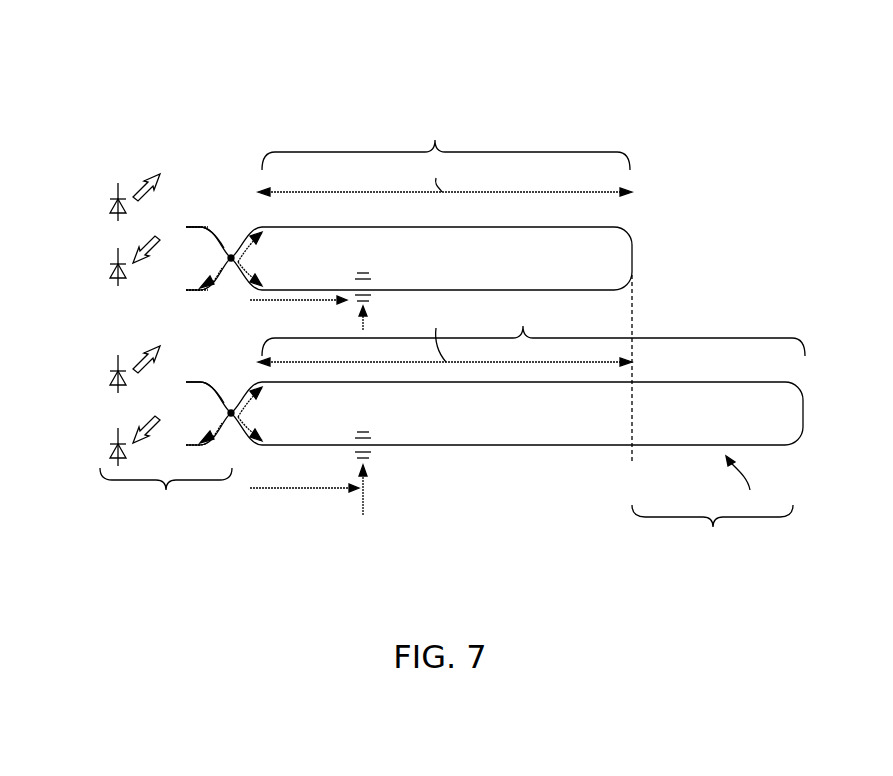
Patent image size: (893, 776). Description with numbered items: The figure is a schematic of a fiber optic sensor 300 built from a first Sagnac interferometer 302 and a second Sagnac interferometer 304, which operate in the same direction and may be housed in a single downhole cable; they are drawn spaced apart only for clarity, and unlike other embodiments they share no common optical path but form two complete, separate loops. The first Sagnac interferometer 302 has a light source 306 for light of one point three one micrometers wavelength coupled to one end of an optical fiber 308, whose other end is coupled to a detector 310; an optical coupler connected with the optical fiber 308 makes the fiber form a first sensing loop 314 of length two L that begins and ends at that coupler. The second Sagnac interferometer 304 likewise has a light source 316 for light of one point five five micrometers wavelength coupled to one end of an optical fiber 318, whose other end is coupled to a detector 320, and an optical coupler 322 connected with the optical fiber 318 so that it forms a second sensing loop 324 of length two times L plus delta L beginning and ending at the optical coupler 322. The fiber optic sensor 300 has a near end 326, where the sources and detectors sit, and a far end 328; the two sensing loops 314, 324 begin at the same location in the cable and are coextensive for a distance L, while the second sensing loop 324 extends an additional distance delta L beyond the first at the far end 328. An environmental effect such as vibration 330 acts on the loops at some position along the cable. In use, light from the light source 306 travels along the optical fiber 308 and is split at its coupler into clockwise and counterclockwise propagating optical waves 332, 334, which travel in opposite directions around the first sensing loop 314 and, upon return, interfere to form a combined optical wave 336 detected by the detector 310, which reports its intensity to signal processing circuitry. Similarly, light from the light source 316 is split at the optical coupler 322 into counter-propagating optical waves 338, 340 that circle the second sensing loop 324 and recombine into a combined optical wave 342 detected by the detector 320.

The fiber optic sensor 300 is at (186, 100).
The first Sagnac interferometer 302 is at (246, 146).
The second Sagnac interferometer 304 is at (154, 328).
The light source 306 is at (112, 206).
The optical fiber 308 is at (203, 226).
The detector 310 is at (112, 271).
The first sensing loop 314 is at (445, 151).
The light source 316 is at (112, 378).
The optical fiber 318 is at (207, 382).
The detector 320 is at (112, 451).
The optical coupler 322 is at (240, 422).
The second sensing loop 324 is at (531, 332).
The near end 326 is at (166, 494).
The far end 328 is at (712, 415).
The vibration 330 is at (390, 283).
The clockwise propagating optical wave 332 is at (251, 245).
The counterclockwise propagating optical wave 334 is at (250, 282).
The combined optical wave 336 is at (206, 280).
The clockwise propagating optical wave 338 is at (252, 392).
The counterclockwise propagating optical wave 340 is at (252, 435).
The combined optical wave 342 is at (208, 435).